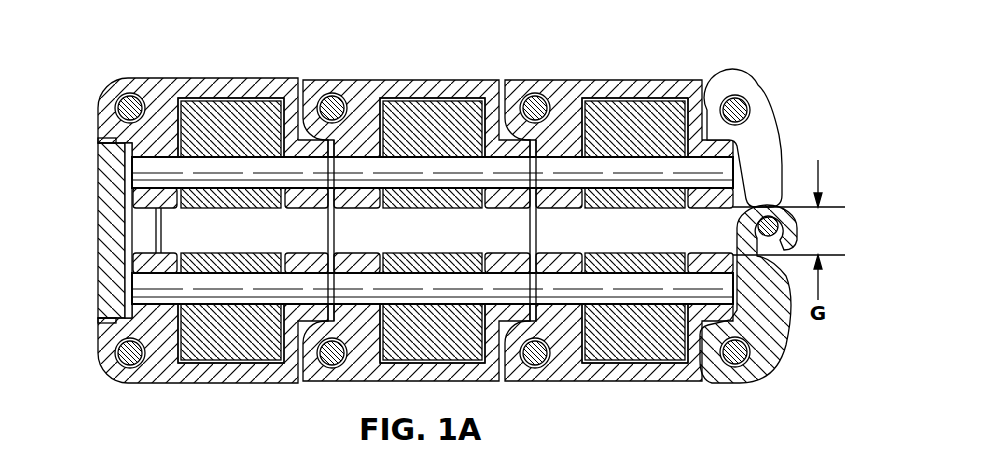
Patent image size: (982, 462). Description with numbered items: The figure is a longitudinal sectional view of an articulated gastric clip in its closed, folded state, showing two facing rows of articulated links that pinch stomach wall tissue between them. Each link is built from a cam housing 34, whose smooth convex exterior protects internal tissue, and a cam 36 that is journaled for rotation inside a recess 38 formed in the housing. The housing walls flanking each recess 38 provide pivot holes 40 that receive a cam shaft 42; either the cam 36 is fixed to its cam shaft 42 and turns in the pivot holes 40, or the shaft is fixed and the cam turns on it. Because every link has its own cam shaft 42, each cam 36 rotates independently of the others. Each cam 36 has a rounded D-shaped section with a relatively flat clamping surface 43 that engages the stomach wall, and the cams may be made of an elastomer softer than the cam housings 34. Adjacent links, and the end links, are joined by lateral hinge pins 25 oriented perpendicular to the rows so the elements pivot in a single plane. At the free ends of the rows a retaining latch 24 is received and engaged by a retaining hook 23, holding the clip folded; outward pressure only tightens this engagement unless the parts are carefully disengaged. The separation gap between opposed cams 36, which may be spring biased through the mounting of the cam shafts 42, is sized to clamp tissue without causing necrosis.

The mating hook 23 is at (768, 330).
The mating latch 24 is at (768, 130).
The lateral hinge pins 25 is at (117, 97).
The cam housing 34 is at (214, 78).
The cam 36 is at (263, 116).
The recess 38 is at (193, 101).
The pivot holes 40 is at (152, 185).
The cam shafts 42 is at (212, 280).
The clamping surface 43 is at (630, 253).